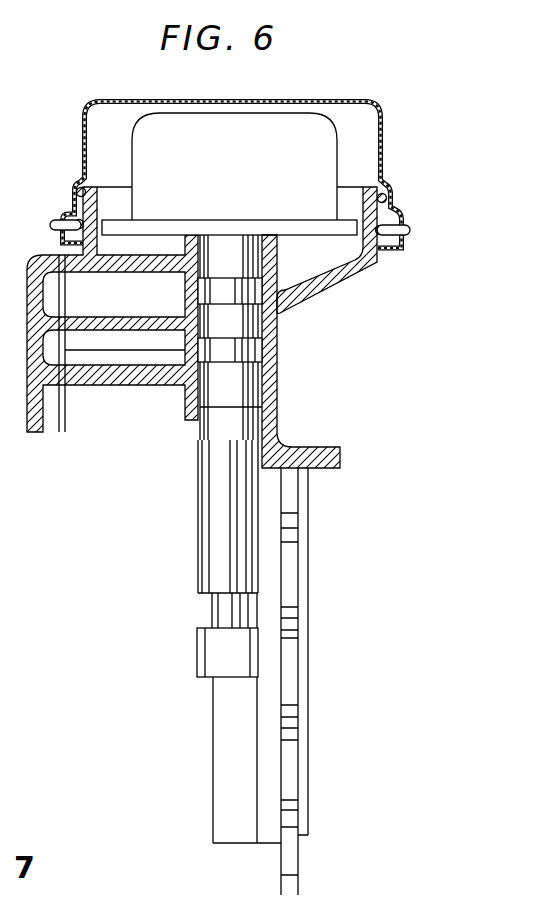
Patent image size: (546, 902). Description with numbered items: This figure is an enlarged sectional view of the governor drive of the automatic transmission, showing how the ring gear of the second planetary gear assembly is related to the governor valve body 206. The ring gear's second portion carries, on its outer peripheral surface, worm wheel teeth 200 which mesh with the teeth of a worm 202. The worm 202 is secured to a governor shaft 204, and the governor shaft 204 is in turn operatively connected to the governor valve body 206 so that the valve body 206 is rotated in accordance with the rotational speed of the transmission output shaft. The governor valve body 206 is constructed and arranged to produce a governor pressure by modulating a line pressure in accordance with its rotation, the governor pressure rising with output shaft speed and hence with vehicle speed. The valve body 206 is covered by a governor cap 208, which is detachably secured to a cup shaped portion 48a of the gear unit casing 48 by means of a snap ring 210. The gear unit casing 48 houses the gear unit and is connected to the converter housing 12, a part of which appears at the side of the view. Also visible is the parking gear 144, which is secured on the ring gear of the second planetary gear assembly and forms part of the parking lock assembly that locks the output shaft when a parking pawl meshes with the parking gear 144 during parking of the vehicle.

The converter housing 12 is at (38, 310).
The gear unit casing 48 is at (325, 455).
The cup shaped portion 48a is at (350, 277).
The parking gear 144 is at (288, 777).
The worm wheel teeth 200 is at (225, 766).
The worm 202 is at (210, 655).
The governor shaft 204 is at (213, 476).
The governor valve body 206 is at (310, 128).
The governor cap 208 is at (369, 100).
The snap ring 210 is at (403, 232).